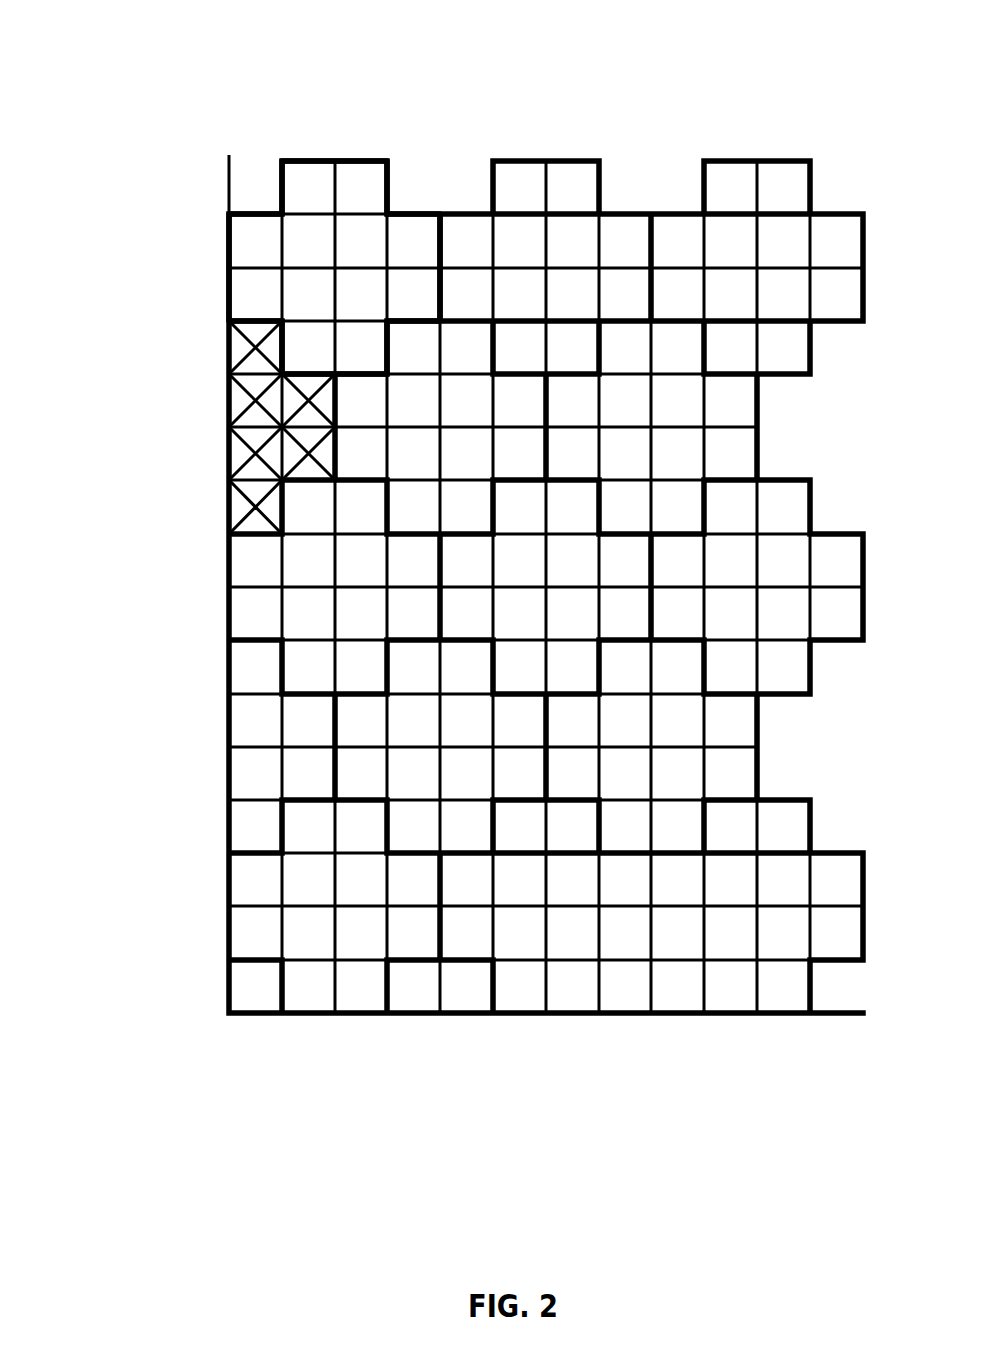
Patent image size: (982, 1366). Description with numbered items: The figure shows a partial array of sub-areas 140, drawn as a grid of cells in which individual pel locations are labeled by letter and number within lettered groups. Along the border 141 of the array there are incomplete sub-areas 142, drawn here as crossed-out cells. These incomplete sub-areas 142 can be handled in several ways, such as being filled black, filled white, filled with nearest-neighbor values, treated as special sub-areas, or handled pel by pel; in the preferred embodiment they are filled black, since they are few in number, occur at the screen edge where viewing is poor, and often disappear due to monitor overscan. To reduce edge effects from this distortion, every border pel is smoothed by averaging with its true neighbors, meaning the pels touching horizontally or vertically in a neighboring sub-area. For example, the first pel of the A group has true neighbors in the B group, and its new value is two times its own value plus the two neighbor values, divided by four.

The partial array of sub-areas 140 is at (458, 590).
The border 141 is at (222, 243).
The incomplete sub-areas 142 is at (477, 1140).